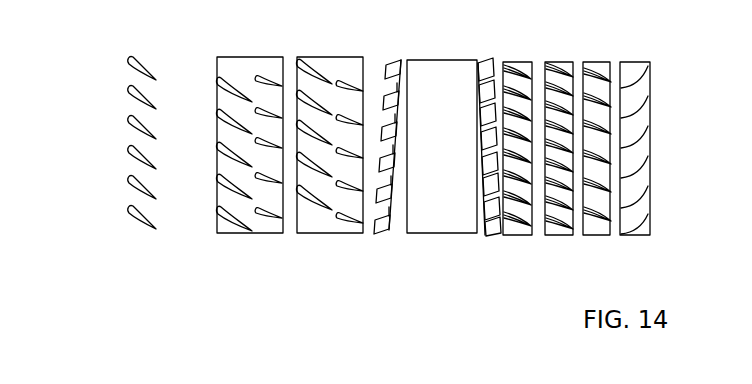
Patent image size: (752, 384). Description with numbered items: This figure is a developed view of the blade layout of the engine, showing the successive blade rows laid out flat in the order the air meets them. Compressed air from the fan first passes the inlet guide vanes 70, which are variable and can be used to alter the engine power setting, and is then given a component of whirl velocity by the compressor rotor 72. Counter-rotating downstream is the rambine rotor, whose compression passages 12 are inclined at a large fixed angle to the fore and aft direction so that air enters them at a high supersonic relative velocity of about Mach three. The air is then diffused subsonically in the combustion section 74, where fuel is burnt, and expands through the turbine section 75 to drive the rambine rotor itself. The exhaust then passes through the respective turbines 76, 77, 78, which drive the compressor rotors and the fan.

The inlet guide vanes 70 is at (157, 78).
The compressor rotor 72 is at (257, 52).
The compression passages 12 is at (388, 230).
The combustion section 74 is at (453, 222).
The turbine section 75 is at (485, 62).
The turbine 76 is at (521, 238).
The turbine 77 is at (555, 62).
The turbine 78 is at (633, 68).